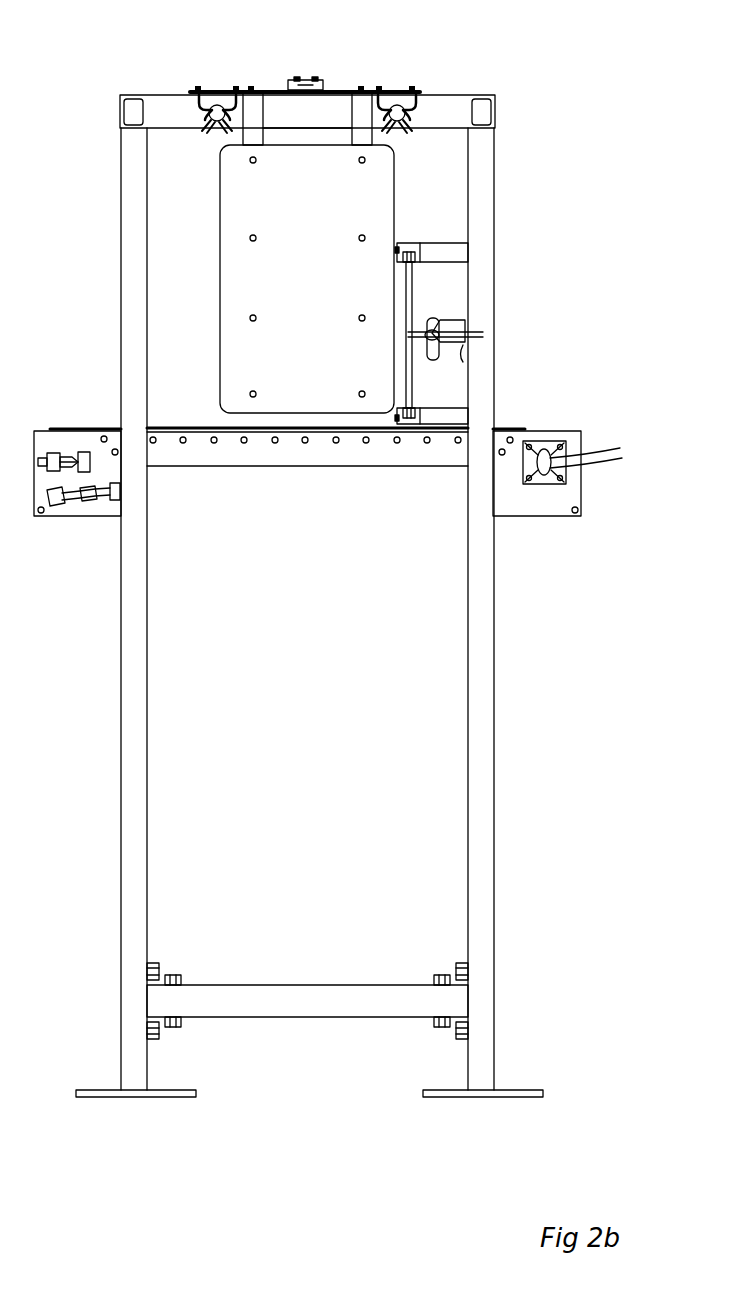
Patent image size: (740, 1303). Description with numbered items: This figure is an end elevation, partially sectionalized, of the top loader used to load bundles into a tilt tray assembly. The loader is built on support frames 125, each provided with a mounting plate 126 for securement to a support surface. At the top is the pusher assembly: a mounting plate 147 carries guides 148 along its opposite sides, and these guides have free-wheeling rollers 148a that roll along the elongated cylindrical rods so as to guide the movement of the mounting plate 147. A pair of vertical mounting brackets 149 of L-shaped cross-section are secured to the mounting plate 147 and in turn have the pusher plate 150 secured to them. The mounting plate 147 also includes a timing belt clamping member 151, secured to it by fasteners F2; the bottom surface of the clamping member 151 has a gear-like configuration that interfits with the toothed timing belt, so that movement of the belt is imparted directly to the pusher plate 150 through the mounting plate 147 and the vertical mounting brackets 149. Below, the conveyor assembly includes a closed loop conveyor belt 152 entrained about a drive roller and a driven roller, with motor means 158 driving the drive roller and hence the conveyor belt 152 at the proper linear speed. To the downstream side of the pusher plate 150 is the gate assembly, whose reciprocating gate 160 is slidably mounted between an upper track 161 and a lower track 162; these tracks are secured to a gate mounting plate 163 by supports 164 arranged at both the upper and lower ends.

The support frame 125 is at (121, 906).
The mounting plate 126 is at (106, 1088).
The mounting plate 147 is at (247, 92).
The guide 148 is at (198, 95).
The free-wheeling roller 148a is at (214, 130).
The vertical mounting bracket 149 is at (350, 135).
The pusher plate 150 is at (333, 193).
The timing belt clamping member 151 is at (305, 79).
The conveyor belt 152 is at (96, 428).
The motor means 158 is at (523, 478).
The reciprocating gate 160 is at (413, 297).
The upper track 161 is at (412, 251).
The lower track 162 is at (412, 427).
The gate mounting plate 163 is at (462, 362).
The support 164 is at (463, 243).
The fastener F2 is at (290, 81).